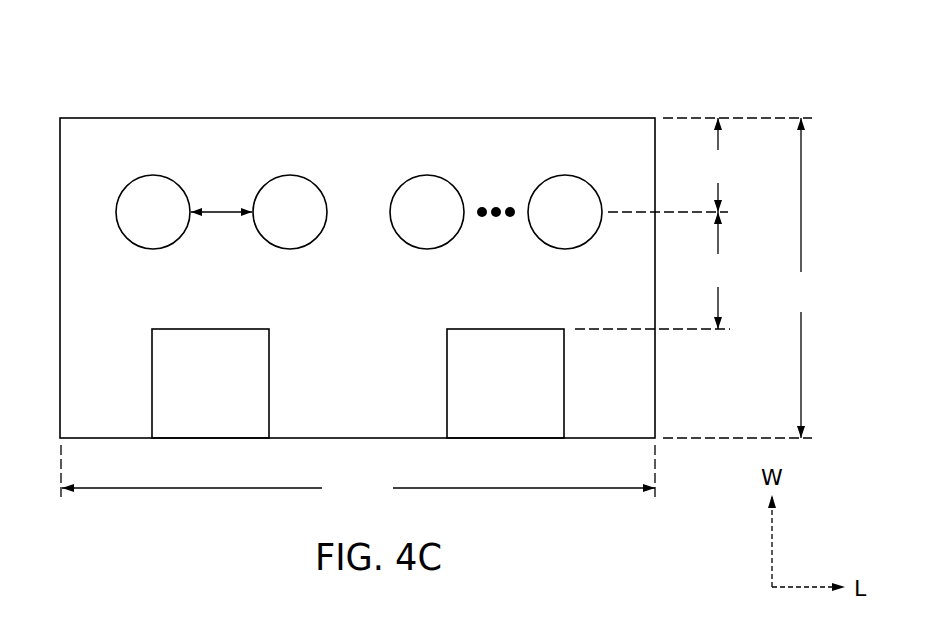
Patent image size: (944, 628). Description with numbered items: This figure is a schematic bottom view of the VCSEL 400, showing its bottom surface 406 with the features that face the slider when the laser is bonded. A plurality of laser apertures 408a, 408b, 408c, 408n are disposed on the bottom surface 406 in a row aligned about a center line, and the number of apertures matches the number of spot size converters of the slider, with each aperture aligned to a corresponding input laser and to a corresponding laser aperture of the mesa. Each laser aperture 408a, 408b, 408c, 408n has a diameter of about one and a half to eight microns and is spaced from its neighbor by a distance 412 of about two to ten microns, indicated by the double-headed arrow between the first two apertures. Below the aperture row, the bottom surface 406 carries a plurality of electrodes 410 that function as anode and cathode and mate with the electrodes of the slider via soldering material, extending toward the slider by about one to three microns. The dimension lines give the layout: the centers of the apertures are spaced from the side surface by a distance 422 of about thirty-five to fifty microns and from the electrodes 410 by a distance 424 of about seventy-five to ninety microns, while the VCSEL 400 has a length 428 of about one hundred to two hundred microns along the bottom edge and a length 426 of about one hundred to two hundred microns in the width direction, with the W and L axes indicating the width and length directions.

The VCSEL 400 is at (148, 73).
The bottom surface 406 is at (342, 362).
The laser aperture 408a is at (180, 222).
The laser aperture 408b is at (317, 222).
The laser aperture 408c is at (454, 222).
The laser aperture 408n is at (592, 222).
The electrodes 410 is at (190, 395).
The distance 412 is at (226, 214).
The distance 422 is at (718, 165).
The distance 424 is at (718, 270).
The length 426 is at (801, 278).
The length 428 is at (358, 488).